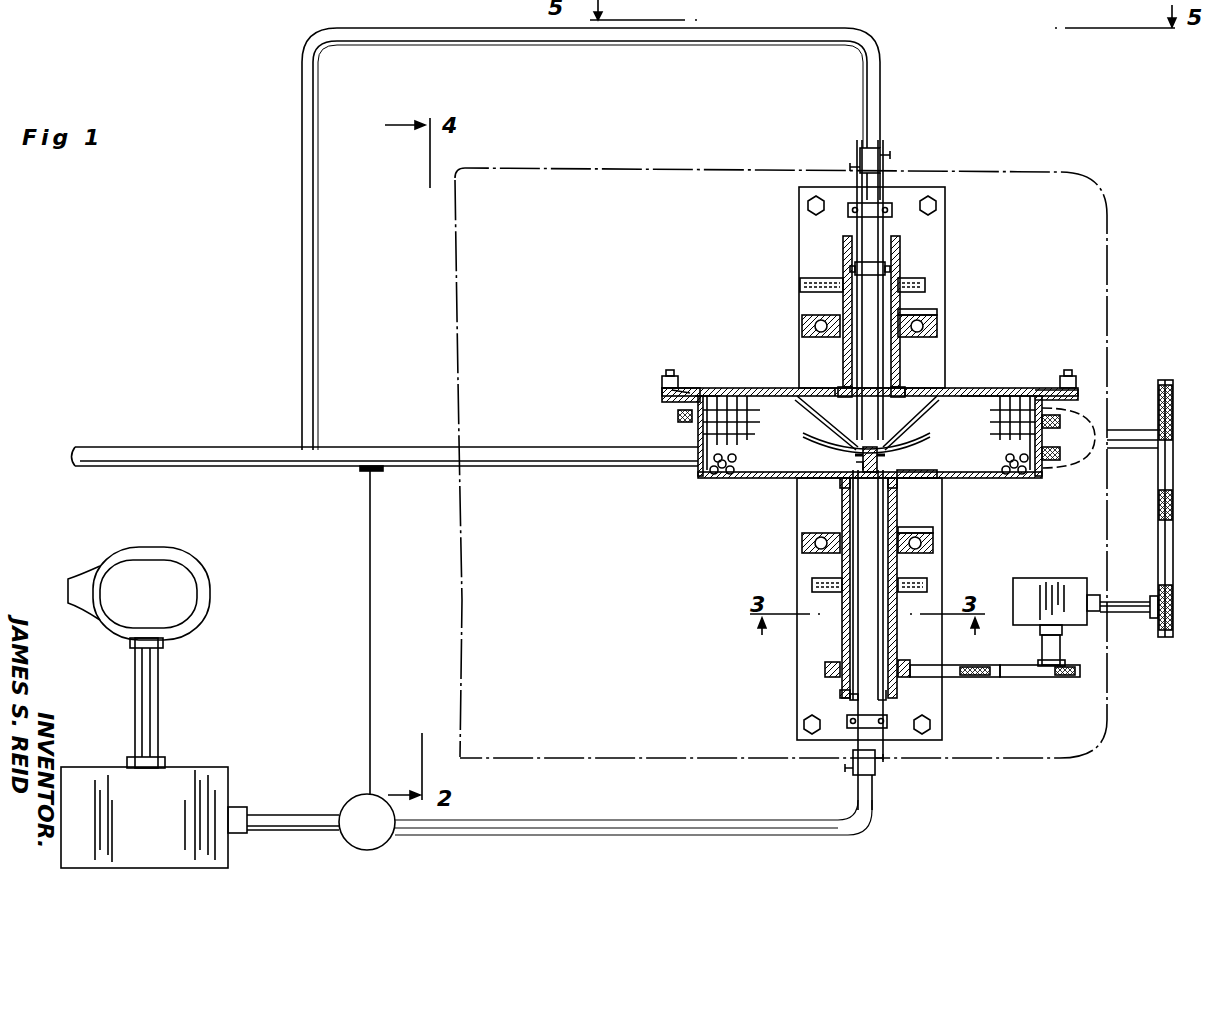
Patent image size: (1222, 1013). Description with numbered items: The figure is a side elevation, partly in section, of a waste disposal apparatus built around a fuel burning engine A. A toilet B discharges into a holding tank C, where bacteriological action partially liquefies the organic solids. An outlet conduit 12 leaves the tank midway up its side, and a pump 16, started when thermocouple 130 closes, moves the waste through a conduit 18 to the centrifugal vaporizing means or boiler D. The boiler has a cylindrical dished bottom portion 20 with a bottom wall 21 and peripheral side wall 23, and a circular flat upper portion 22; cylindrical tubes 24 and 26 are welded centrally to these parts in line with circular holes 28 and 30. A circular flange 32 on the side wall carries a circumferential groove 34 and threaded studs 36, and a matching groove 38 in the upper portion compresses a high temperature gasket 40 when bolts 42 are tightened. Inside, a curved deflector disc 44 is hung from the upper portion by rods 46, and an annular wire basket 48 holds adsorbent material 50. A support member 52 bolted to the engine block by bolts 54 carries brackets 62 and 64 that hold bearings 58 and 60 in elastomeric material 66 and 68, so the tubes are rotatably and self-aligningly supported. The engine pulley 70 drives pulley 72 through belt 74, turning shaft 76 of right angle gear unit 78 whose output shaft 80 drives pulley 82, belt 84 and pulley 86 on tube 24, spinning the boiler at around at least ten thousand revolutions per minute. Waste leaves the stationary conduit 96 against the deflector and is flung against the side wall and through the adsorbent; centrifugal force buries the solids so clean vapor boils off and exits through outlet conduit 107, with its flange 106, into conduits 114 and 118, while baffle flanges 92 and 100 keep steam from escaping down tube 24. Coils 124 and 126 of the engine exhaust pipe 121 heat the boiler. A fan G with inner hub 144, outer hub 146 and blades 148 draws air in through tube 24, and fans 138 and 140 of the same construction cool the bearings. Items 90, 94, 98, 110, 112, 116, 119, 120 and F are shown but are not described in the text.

The outlet conduit 12 is at (278, 815).
The pump 16 is at (390, 840).
The conduit 18 is at (708, 835).
The cylindrical dished bottom portion 20 is at (1000, 478).
The bottom wall 21 is at (778, 478).
The circular flat upper portion 22 is at (787, 388).
The peripheral side wall 23 is at (698, 438).
The cylindrical tube 24 is at (870, 609).
The cylindrical tube 26 is at (900, 352).
The circular hole 28 is at (845, 480).
The circular hole 30 is at (898, 390).
The circular flange 32 is at (662, 400).
The circumferential groove 34 is at (678, 414).
The threaded studs 36 is at (668, 376).
The circumferential groove 38 is at (690, 392).
The high temperature gasket 40 is at (676, 388).
The bolts 42 is at (666, 376).
The deflector means 44 is at (935, 433).
The rods 46 is at (812, 412).
The annular wire basket 48 is at (735, 440).
The adsorbent material 50 is at (720, 475).
The support member 52 is at (799, 232).
The bolts 54 is at (808, 205).
The bearing 58 is at (920, 533).
The bearing 60 is at (920, 315).
The bracket 62 is at (935, 548).
The bracket 64 is at (938, 330).
The elastomeric material 66 is at (808, 556).
The elastomeric material 68 is at (805, 340).
The conventional pulley 70 is at (1165, 380).
The pulley 72 is at (1166, 637).
The belt 74 is at (1168, 553).
The shaft 76 is at (1140, 602).
The right angle gear unit 78 is at (1050, 578).
The output shaft 80 is at (1060, 648).
The pulley 82 is at (1045, 678).
The belt 84 is at (990, 678).
The pulley 86 is at (832, 662).
The sleeve flange 90 is at (842, 482).
The flange 92 is at (880, 460).
The sleeve flange 94 is at (892, 482).
The conduit 96 is at (883, 740).
The plate opening 98 is at (905, 478).
The flange 100 is at (856, 462).
The flange 106 is at (836, 388).
The outlet conduit 107 is at (860, 300).
The bearing block 110 is at (850, 728).
The coupling 112 is at (878, 772).
The conduit 114 is at (862, 182).
The bearing block 116 is at (885, 203).
The conduit 118 is at (748, 34).
The bearing 119 is at (852, 270).
The coupling 120 is at (860, 150).
The exhaust pipe 121 is at (540, 450).
The coil 124 is at (1060, 452).
The coil 126 is at (1060, 421).
The thermocouple 130 is at (360, 470).
The fan 138 is at (928, 284).
The fan 140 is at (928, 585).
The inner hub 144 is at (900, 285).
The outer hub 146 is at (840, 694).
The blades 148 is at (850, 697).
The fuel burning engine A is at (1034, 172).
The toilet B is at (122, 548).
The holding tank C is at (200, 762).
The centrifugal vaporizing means D is at (980, 392).
The drive detail F is at (1085, 405).
The fan G is at (888, 704).